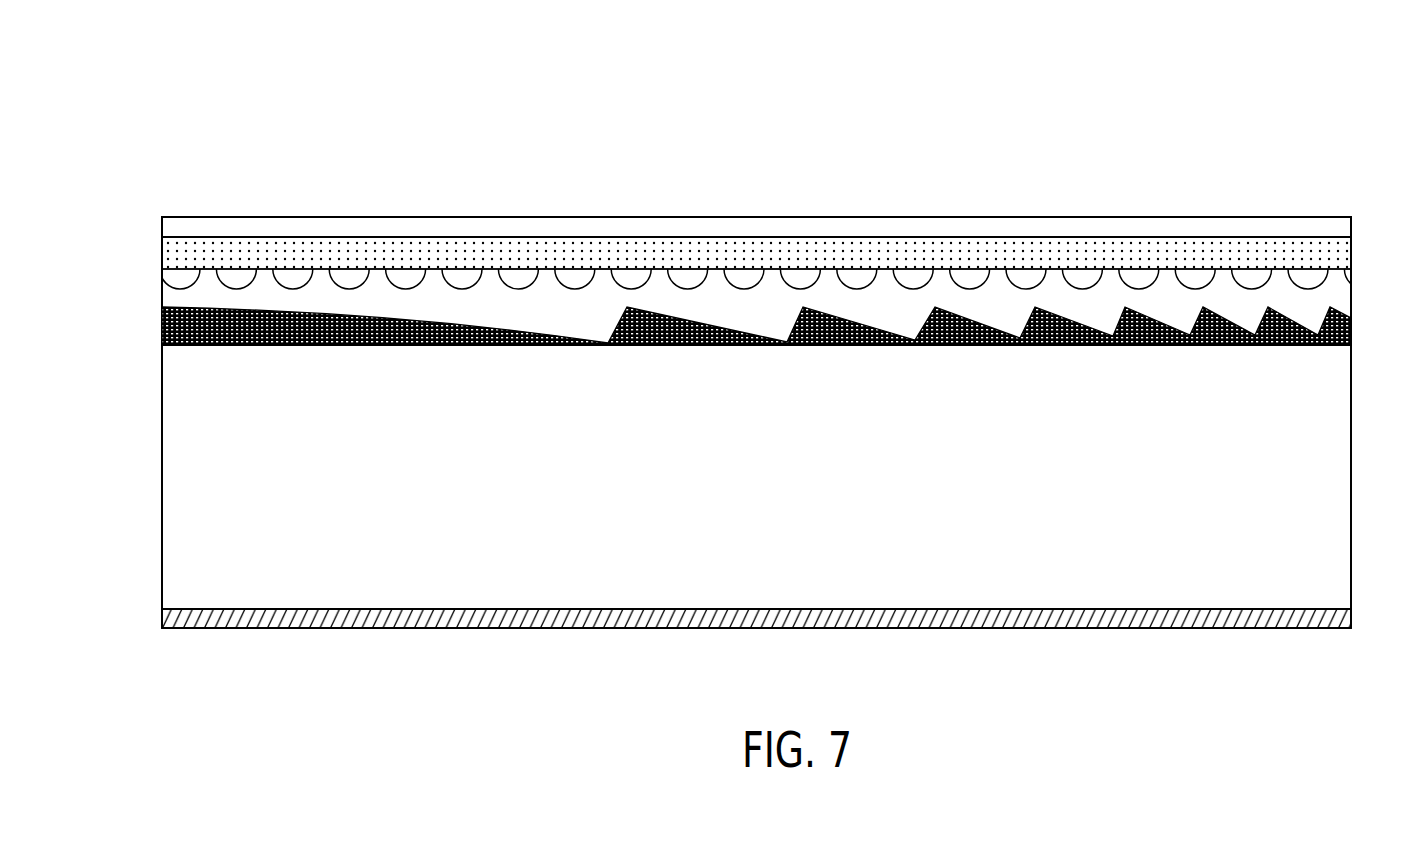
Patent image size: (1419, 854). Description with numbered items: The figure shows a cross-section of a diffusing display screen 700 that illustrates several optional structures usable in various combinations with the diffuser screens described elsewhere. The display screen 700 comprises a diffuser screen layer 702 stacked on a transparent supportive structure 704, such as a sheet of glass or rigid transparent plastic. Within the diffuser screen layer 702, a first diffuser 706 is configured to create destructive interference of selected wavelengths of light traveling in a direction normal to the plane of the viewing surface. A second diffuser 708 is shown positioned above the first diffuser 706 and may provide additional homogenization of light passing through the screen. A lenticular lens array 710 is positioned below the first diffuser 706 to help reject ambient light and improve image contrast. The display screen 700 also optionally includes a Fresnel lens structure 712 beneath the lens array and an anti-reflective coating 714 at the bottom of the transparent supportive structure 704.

The diffusing display screen 700 is at (207, 147).
The diffuser screen layer 702 is at (148, 258).
The transparent supportive structure 704 is at (161, 562).
The first diffuser 706 is at (1345, 260).
The second diffuser 708 is at (1340, 222).
The lenticular lens array 710 is at (1313, 276).
The Fresnel lens structure 712 is at (1352, 345).
The anti-reflective coating 714 is at (1340, 618).